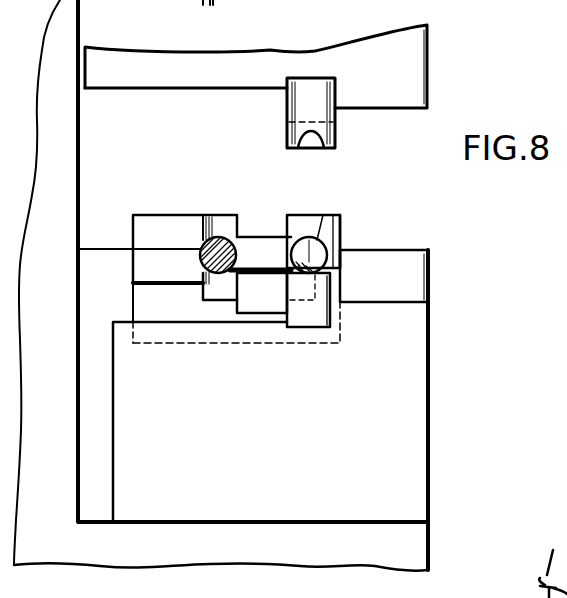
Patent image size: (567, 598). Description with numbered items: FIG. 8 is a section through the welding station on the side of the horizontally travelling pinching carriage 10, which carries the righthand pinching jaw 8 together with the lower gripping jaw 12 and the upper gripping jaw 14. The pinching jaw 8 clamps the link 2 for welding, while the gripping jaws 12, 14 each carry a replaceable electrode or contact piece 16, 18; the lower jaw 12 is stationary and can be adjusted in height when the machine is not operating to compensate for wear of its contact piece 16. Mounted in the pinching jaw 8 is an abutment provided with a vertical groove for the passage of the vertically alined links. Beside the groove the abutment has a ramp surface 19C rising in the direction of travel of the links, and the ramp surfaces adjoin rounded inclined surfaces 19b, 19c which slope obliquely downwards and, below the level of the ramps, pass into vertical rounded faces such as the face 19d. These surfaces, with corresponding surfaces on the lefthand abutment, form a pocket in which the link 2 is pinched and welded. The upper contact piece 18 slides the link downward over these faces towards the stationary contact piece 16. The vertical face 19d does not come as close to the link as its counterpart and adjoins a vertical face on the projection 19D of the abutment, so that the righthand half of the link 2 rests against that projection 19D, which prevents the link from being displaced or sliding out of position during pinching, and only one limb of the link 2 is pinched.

The link 2 is at (256, 262).
The righthand pinching jaw 8 is at (78, 287).
The pinching carriage 10 is at (420, 546).
The lower gripping jaw 12 is at (412, 388).
The upper gripping jaw 14 is at (110, 80).
The electrode or contact piece 16 is at (326, 300).
The electrode or contact piece 18 is at (289, 112).
The rounded inclined surface 19b is at (216, 224).
The rounded inclined surface 19c is at (301, 222).
The ramp surface 19C is at (338, 240).
The projection 19D is at (144, 252).
The vertical rounded face 19d is at (218, 290).